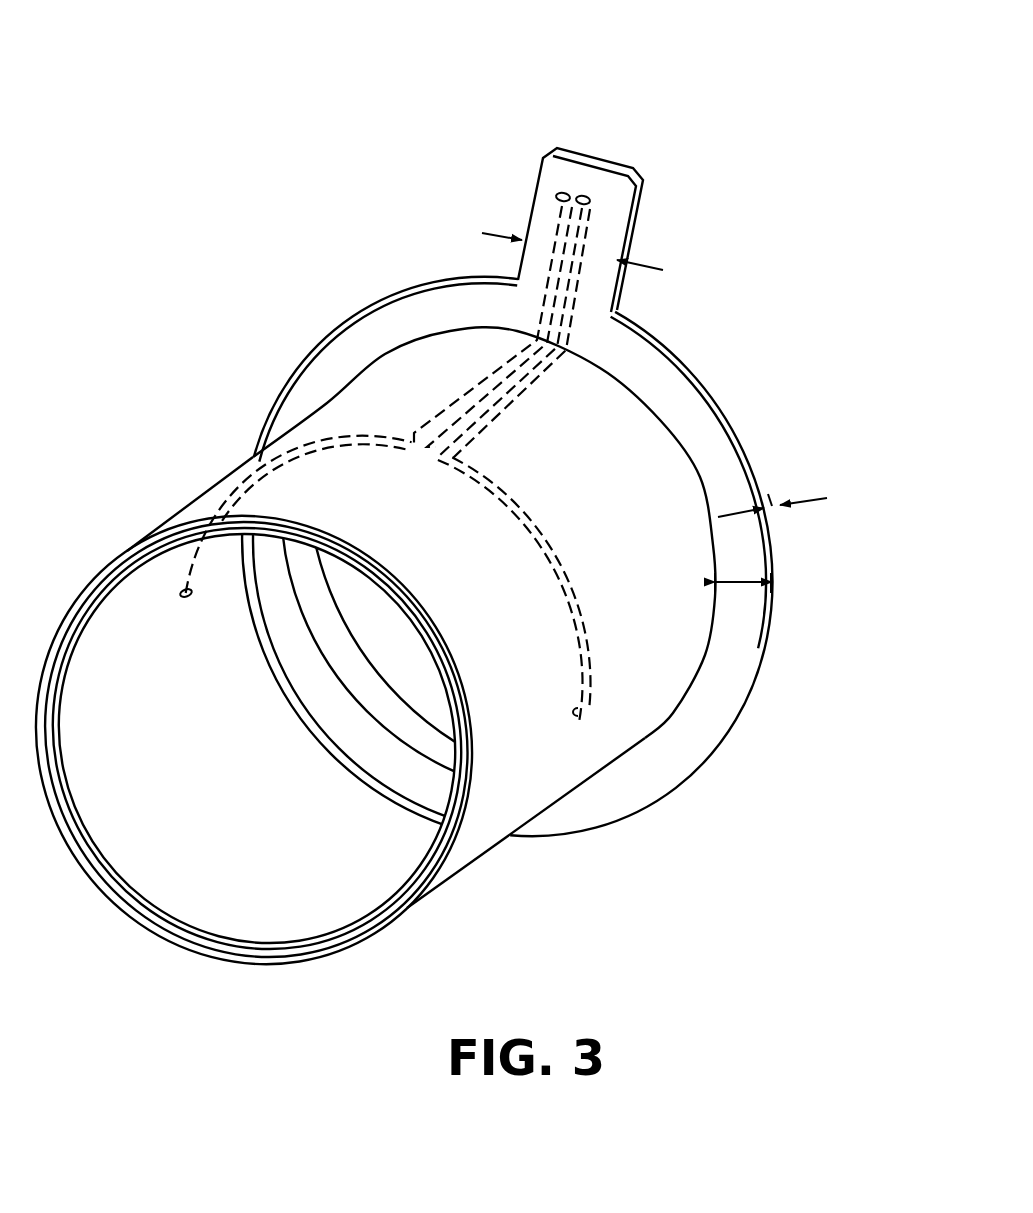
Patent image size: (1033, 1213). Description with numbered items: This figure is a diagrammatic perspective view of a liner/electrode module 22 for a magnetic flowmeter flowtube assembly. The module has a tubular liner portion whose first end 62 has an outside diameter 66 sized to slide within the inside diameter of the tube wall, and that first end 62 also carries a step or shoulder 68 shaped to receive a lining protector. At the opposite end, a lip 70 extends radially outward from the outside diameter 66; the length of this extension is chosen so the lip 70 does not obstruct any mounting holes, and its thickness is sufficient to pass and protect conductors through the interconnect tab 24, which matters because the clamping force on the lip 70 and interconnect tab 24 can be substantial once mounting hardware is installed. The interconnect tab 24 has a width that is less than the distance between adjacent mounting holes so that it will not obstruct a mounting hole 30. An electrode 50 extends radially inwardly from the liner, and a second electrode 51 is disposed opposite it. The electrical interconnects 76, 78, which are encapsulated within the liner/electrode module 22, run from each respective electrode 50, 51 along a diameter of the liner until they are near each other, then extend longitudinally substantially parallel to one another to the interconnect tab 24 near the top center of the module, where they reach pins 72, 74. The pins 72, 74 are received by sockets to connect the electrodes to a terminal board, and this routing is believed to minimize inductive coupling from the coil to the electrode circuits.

The liner/electrode module 22 is at (748, 68).
The interconnect tab 24 is at (632, 224).
The mounting hole 30 is at (400, 470).
The electrode 50 is at (187, 599).
The second electrode 51 is at (570, 712).
The first end 62 is at (205, 940).
The outside diameter 66 is at (283, 963).
The step or shoulder 68 is at (125, 567).
The lip 70 is at (641, 777).
The pin 72 is at (565, 192).
The pin 74 is at (584, 196).
The electrical interconnect 76 is at (357, 432).
The electrical interconnect 78 is at (505, 482).